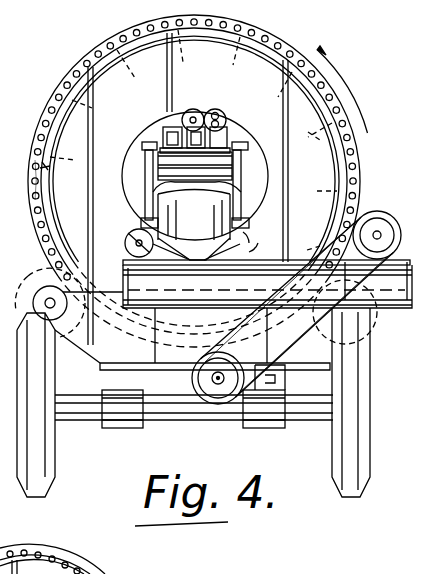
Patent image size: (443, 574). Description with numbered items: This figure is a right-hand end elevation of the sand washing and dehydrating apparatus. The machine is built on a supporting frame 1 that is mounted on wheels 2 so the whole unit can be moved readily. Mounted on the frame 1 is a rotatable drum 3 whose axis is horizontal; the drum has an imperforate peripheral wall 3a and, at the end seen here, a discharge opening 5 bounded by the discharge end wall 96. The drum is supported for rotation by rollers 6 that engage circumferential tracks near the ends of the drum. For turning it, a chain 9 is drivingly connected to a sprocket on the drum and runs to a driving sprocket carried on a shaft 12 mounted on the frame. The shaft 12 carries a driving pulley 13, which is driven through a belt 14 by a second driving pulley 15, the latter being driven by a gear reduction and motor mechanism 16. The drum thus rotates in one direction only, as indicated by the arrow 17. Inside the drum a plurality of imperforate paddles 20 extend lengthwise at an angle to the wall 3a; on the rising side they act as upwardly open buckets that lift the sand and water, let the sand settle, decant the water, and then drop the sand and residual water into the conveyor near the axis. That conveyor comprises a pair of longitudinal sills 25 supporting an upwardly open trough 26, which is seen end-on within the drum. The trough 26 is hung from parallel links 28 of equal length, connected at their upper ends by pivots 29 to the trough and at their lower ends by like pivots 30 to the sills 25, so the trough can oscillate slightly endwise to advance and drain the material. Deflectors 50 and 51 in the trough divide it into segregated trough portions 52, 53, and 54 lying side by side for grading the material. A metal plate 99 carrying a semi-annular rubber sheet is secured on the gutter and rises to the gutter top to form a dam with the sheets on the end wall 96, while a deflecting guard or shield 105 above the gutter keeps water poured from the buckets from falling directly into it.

The supporting frame 1 is at (118, 428).
The wheels 2 is at (37, 497).
The rotatable drum 3 is at (62, 90).
The imperforate peripheral wall 3a is at (50, 111).
The discharge opening 5 is at (128, 160).
The rollers 6 is at (374, 321).
The chain 9 is at (230, 20).
The shaft 12 is at (219, 384).
The driving pulley 13 is at (211, 398).
The belt 14 is at (318, 340).
The driving pulley 15 is at (384, 218).
The gear reduction and motor mechanism 16 is at (30, 289).
The arrow 17 is at (351, 95).
The imperforate paddles 20 is at (36, 180).
The longitudinal sills 25 is at (152, 245).
The trough 26 is at (238, 142).
The links 28 is at (152, 187).
The pivots 29 is at (248, 149).
The pivots 30 is at (249, 224).
The deflector 50 is at (168, 124).
The deflector 51 is at (194, 130).
The segregated trough portion 52 is at (163, 135).
The segregated trough portion 53 is at (216, 110).
The segregated trough portion 54 is at (232, 140).
The discharge end wall 96 is at (167, 59).
The metal plate 99 is at (262, 205).
The deflecting guard or shield 105 is at (172, 190).